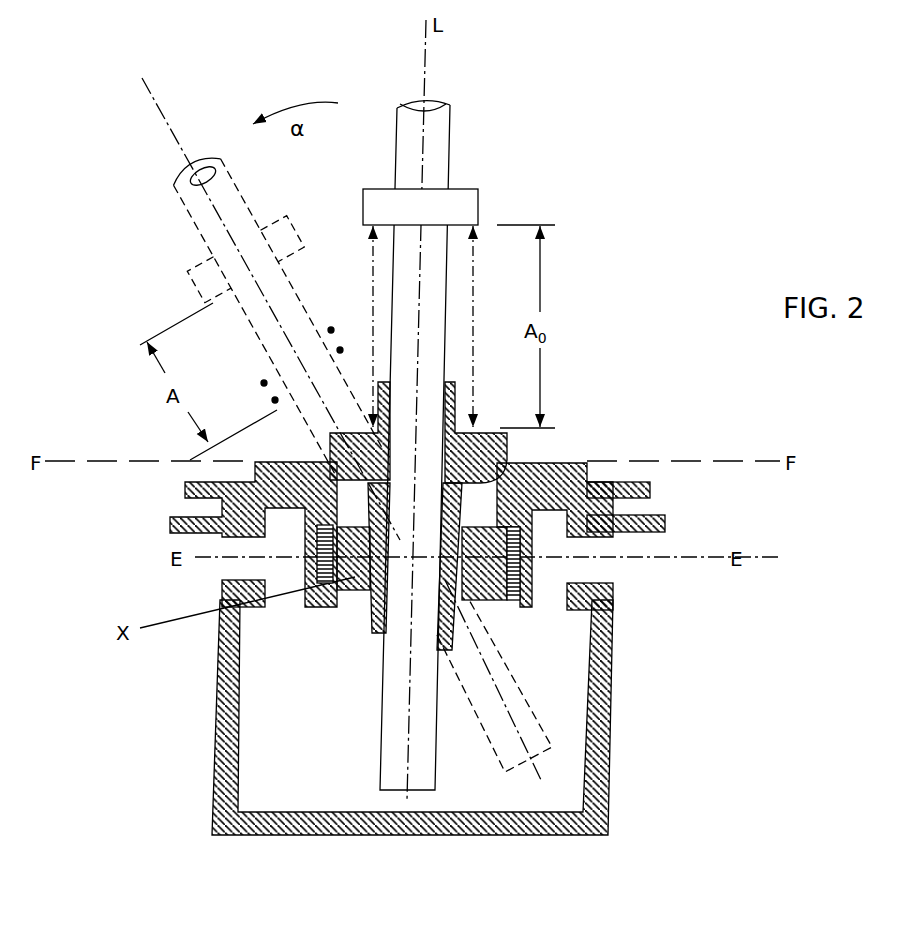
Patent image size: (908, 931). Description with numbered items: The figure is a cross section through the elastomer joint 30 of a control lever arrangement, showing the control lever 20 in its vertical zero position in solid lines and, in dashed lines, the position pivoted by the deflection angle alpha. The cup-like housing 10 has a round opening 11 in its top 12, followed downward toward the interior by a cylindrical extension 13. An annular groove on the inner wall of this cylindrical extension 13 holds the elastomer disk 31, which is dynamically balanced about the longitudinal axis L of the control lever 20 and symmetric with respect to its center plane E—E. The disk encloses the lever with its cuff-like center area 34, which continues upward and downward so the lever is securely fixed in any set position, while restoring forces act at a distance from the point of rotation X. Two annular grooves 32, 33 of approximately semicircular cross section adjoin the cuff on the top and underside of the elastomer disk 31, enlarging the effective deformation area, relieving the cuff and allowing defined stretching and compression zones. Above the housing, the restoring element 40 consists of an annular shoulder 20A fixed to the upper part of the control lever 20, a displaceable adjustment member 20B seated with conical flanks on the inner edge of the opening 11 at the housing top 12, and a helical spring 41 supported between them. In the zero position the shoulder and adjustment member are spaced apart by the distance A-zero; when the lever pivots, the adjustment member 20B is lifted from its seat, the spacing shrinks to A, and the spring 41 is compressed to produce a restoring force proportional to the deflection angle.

The housing 10 is at (616, 758).
The opening of the housing 11 is at (477, 437).
The top of the housing 12 is at (554, 461).
The cylindrical extension 13 is at (516, 549).
The control lever 20 is at (431, 163).
The annular shoulder 20A is at (448, 223).
The adjustment member 20B is at (600, 502).
The elastomer joint 30 is at (366, 605).
The elastomer disk 31 is at (586, 604).
The annular groove 32 is at (500, 606).
The annular groove 33 is at (358, 598).
The cuff-like center area 34 is at (452, 605).
The restoring element 40 is at (198, 302).
The helical spring 41 is at (479, 283).